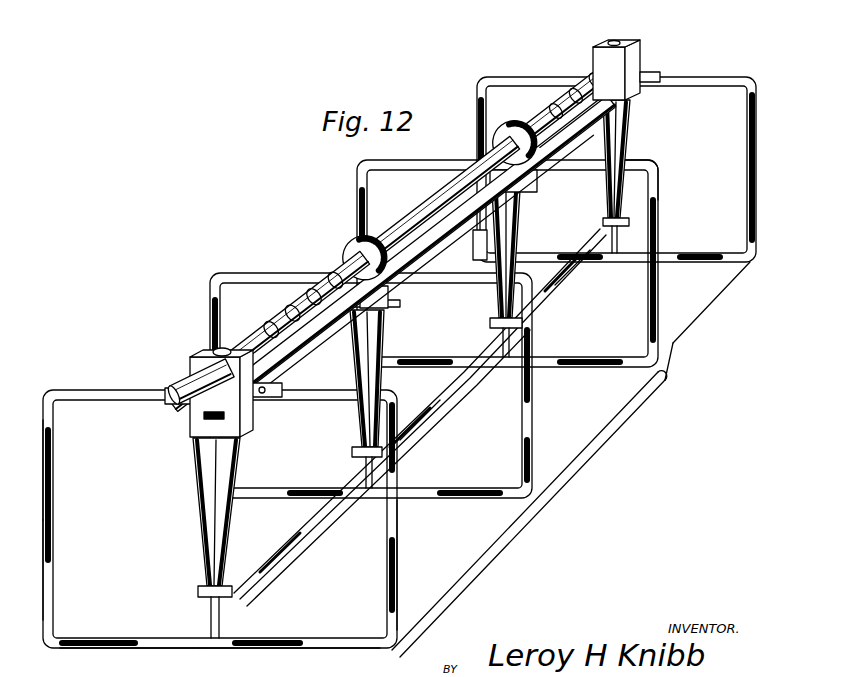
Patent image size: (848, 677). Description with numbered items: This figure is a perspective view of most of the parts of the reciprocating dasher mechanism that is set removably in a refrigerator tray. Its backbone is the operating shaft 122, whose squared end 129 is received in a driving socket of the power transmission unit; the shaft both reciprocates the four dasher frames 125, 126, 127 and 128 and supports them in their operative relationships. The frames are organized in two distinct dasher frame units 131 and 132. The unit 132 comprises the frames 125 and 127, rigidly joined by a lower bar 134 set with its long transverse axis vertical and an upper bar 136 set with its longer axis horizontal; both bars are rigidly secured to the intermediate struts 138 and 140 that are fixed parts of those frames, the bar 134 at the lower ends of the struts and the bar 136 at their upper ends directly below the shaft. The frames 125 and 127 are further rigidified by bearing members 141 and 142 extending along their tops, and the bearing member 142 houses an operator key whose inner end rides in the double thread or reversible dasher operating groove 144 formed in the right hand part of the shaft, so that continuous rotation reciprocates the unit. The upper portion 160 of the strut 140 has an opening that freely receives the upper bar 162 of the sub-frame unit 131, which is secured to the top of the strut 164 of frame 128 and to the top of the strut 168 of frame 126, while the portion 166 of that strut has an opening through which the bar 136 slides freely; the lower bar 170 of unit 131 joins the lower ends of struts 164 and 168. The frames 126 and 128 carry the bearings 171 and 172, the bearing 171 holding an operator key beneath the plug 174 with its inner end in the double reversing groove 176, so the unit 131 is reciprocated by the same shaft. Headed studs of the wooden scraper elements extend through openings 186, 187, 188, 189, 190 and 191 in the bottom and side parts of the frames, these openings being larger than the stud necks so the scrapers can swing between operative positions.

The operating shaft 122 is at (446, 198).
The dasher frame 125 is at (718, 78).
The dasher frame 126 is at (656, 168).
The dasher frame 127 is at (535, 356).
The dasher frame 128 is at (402, 478).
The squared end 129 is at (182, 412).
The dasher frame unit 131 is at (556, 532).
The dasher frame unit 132 is at (707, 321).
The lower bar 134 is at (588, 271).
The upper bar 136 is at (573, 122).
The intermediate strut 138 is at (629, 128).
The intermediate strut 140 is at (381, 346).
The bearing member 141 is at (431, 206).
The bearing member 142 is at (616, 46).
The reversible dasher operating groove 144 is at (573, 98).
The upper portion of strut 160 is at (389, 304).
The upper bar 162 is at (431, 244).
The strut 164 is at (239, 460).
The portion of strut 166 is at (522, 184).
The strut 168 is at (518, 208).
The lower bar 170 is at (325, 527).
The bearing 171 is at (198, 355).
The bearing 172 is at (515, 143).
The plug 174 is at (226, 347).
The double reversing groove 176 is at (268, 332).
The opening 186 is at (432, 437).
The opening 187 is at (397, 577).
The opening 188 is at (318, 636).
The opening 189 is at (118, 636).
The opening 190 is at (55, 578).
The opening 191 is at (58, 466).